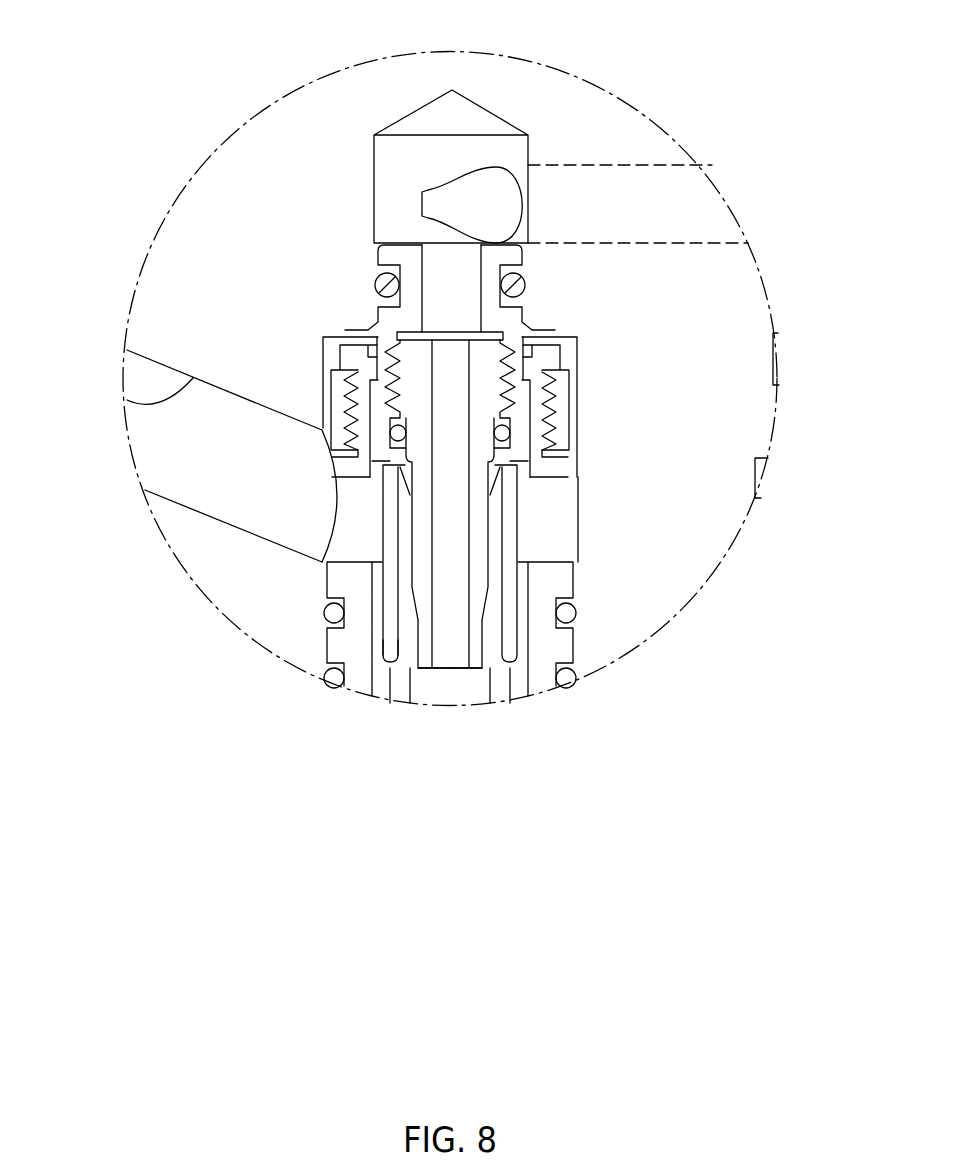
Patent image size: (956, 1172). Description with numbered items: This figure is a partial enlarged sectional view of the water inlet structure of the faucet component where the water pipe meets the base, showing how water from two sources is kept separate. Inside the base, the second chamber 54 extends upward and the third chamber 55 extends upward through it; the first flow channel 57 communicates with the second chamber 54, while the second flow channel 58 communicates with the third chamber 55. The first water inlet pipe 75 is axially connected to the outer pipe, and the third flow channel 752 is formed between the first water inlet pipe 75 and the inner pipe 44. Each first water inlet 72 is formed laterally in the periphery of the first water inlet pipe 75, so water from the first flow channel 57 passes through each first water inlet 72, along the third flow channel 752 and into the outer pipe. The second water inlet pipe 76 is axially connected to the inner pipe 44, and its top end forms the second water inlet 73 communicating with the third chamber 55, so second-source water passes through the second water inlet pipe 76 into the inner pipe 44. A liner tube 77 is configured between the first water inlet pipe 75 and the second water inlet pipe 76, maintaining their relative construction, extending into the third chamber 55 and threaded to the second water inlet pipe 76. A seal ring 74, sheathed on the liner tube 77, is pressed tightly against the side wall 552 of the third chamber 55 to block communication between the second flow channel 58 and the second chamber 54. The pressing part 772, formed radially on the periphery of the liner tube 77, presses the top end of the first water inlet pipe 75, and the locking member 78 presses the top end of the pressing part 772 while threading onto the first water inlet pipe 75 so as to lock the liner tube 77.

The inner pipe 44 is at (390, 688).
The second chamber 54 is at (582, 521).
The third chamber 55 is at (431, 123).
The side wall 552 is at (373, 158).
The first flow channel 57 is at (123, 399).
The second flow channel 58 is at (612, 163).
The first water inlet 72 is at (330, 548).
The second water inlet 73 is at (452, 340).
The seal ring 74 is at (373, 270).
The first water inlet pipe 75 is at (339, 583).
The third flow channel 752 is at (378, 637).
The second water inlet pipe 76 is at (450, 668).
The liner tube 77 is at (398, 243).
The pressing part 772 is at (355, 368).
The locking member 78 is at (578, 413).